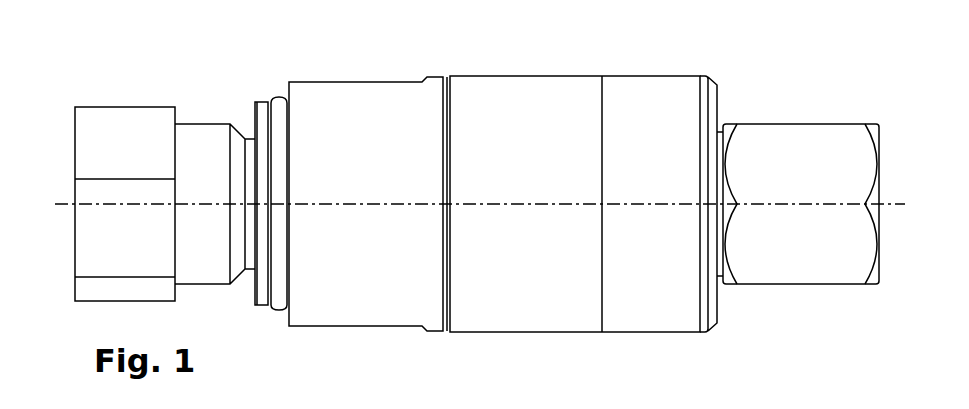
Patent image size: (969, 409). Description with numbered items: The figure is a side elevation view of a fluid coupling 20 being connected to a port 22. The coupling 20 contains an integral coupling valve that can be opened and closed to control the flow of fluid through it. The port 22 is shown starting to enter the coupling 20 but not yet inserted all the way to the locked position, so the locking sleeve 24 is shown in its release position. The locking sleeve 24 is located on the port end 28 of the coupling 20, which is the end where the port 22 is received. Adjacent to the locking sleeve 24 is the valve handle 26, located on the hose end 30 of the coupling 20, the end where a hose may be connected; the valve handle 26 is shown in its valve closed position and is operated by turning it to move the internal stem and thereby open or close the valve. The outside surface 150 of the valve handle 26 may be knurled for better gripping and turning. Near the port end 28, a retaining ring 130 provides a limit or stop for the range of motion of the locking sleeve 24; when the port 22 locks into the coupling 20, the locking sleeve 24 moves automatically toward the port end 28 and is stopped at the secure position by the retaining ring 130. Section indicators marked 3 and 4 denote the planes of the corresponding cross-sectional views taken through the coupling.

The section line 3- 3 is at (53, 160).
The section line 4- 4 is at (682, 365).
The fluid coupling 20 is at (350, 42).
The port 22 is at (143, 112).
The locking sleeve 24 is at (368, 82).
The valve handle 26 is at (562, 76).
The port end 28 is at (270, 59).
The hose end 30 is at (806, 92).
The retaining ring 130 is at (278, 311).
The outside surface 150 is at (628, 332).